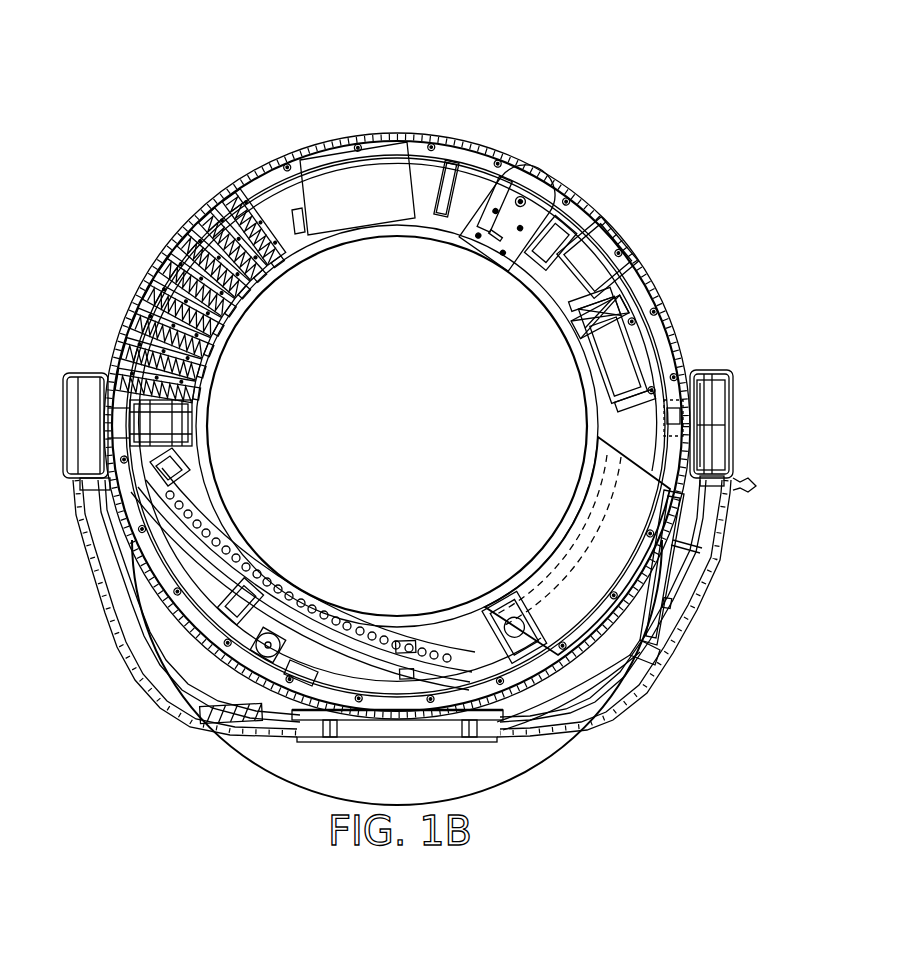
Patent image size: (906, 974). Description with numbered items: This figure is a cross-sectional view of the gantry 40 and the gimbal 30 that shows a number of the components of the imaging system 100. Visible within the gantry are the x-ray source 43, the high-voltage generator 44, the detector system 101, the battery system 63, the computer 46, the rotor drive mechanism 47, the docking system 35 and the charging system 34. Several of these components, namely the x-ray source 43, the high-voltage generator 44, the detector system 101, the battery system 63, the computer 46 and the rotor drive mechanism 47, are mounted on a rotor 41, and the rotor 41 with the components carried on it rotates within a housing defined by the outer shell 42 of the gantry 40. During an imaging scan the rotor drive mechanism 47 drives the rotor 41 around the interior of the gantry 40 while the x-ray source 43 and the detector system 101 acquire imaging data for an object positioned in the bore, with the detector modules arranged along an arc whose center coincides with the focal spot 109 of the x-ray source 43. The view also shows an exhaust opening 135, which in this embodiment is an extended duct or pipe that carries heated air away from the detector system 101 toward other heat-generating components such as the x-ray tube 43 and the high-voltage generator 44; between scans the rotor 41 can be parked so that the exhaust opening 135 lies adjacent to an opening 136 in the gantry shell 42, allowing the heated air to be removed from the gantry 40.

The imaging system 100 is at (274, 118).
The gantry 40 is at (210, 183).
The computer 46 is at (343, 180).
The rotor 41 is at (445, 170).
The outer shell 42 is at (470, 142).
The x-ray source 43 is at (540, 220).
The battery system 63 is at (193, 287).
The focal spot 109 is at (484, 266).
The exhaust opening 135 is at (672, 415).
The gimbal 30 is at (712, 372).
The opening 136 is at (688, 425).
The docking system 35 is at (157, 425).
The high-voltage generator 44 is at (603, 537).
The detector system 101 is at (258, 562).
The charging system 34 is at (687, 568).
The rotor drive mechanism 47 is at (262, 650).